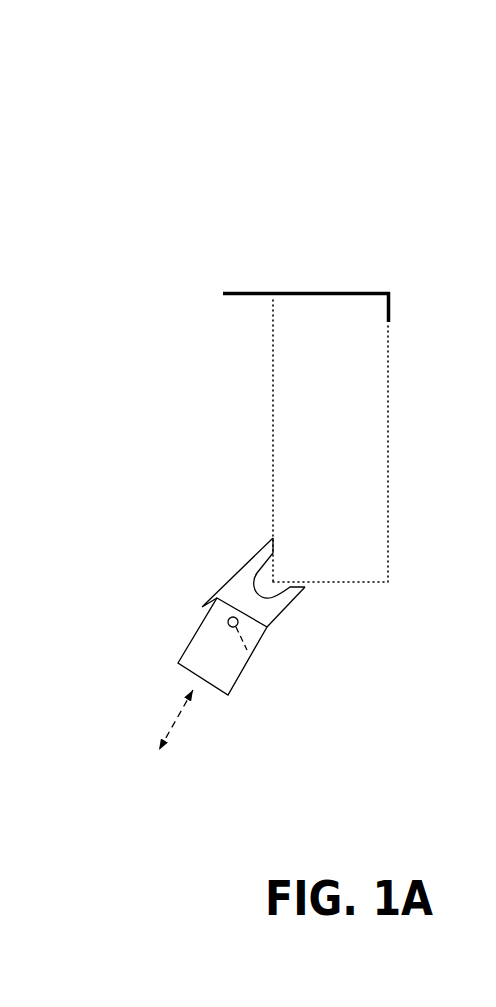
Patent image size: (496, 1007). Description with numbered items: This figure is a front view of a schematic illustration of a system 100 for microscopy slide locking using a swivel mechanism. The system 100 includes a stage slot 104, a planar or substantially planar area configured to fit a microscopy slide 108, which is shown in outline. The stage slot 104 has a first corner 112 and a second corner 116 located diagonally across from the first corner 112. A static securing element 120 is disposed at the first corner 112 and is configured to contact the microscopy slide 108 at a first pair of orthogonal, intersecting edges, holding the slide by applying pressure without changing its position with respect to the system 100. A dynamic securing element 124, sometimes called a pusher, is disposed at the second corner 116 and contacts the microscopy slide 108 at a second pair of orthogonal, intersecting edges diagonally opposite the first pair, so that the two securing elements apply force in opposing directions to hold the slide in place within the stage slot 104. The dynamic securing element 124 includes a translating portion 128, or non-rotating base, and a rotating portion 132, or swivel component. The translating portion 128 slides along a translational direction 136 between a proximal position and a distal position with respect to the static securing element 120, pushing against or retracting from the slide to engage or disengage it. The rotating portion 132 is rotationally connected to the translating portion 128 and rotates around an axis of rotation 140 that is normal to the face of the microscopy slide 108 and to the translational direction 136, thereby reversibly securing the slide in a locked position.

The system 100 is at (192, 123).
The stage slot 104 is at (387, 430).
The microscopy slide 108 is at (368, 508).
The first corner 112 is at (373, 303).
The second corner 116 is at (277, 581).
The static securing element 120 is at (389, 291).
The dynamic securing element 124 is at (187, 602).
The translating portion 128 is at (250, 662).
The rotating portion 132 is at (297, 608).
The translational direction 136 is at (192, 720).
The axis of rotation 140 is at (225, 618).